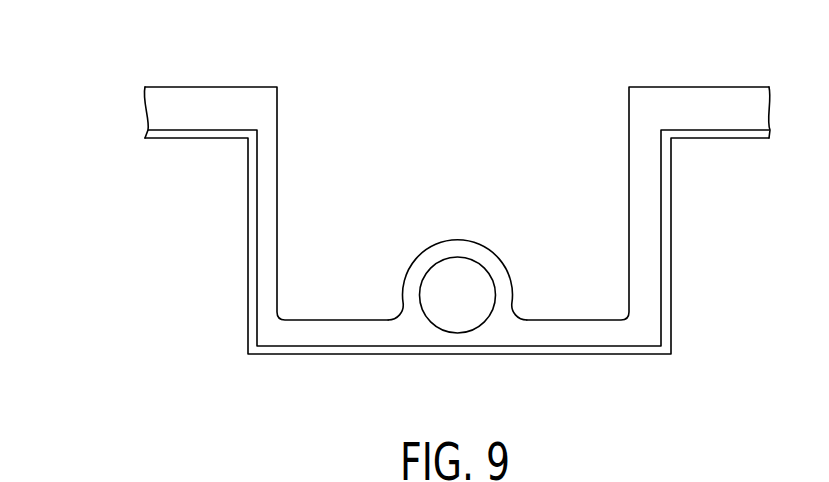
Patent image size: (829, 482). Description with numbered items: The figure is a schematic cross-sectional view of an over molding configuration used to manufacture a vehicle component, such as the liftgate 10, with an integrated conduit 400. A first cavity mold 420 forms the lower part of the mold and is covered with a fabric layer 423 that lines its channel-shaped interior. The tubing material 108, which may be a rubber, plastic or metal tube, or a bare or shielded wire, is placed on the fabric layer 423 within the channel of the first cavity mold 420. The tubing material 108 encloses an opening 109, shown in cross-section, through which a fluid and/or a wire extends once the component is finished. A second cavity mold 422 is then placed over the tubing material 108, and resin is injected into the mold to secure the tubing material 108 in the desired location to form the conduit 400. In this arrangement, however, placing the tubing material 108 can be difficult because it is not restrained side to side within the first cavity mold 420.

The liftgate 10 is at (88, 94).
The conduit 400 is at (497, 186).
The first cavity mold 420 is at (248, 321).
The second cavity mold 422 is at (430, 247).
The fabric layer 423 is at (623, 347).
The tubing material 108 is at (487, 317).
The opening 109 is at (458, 301).